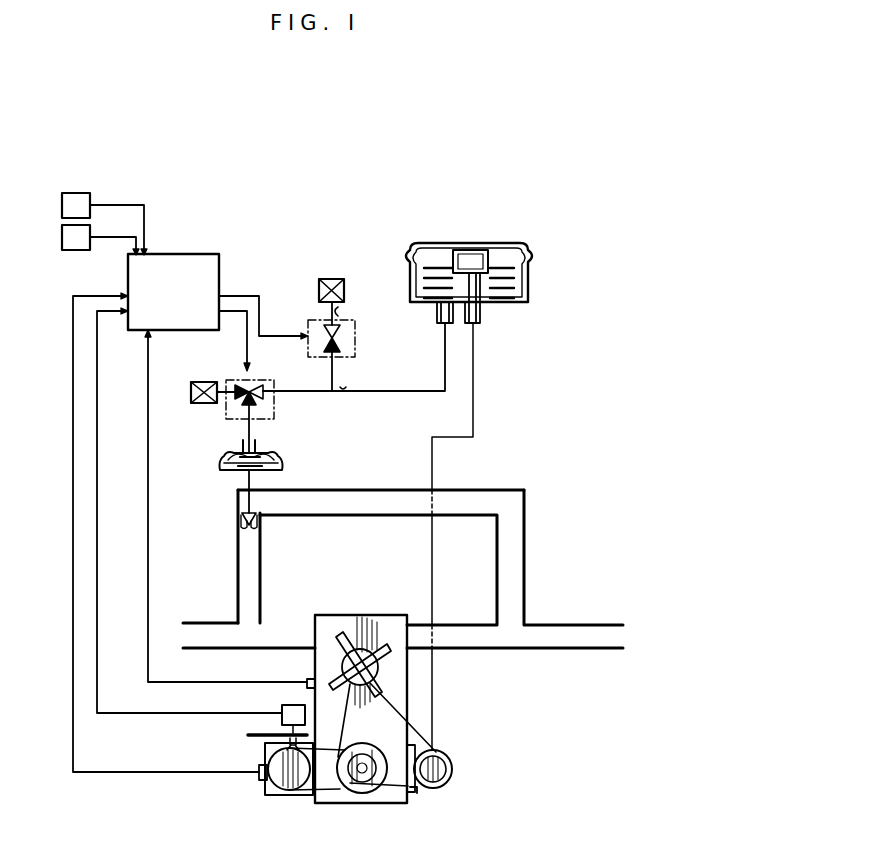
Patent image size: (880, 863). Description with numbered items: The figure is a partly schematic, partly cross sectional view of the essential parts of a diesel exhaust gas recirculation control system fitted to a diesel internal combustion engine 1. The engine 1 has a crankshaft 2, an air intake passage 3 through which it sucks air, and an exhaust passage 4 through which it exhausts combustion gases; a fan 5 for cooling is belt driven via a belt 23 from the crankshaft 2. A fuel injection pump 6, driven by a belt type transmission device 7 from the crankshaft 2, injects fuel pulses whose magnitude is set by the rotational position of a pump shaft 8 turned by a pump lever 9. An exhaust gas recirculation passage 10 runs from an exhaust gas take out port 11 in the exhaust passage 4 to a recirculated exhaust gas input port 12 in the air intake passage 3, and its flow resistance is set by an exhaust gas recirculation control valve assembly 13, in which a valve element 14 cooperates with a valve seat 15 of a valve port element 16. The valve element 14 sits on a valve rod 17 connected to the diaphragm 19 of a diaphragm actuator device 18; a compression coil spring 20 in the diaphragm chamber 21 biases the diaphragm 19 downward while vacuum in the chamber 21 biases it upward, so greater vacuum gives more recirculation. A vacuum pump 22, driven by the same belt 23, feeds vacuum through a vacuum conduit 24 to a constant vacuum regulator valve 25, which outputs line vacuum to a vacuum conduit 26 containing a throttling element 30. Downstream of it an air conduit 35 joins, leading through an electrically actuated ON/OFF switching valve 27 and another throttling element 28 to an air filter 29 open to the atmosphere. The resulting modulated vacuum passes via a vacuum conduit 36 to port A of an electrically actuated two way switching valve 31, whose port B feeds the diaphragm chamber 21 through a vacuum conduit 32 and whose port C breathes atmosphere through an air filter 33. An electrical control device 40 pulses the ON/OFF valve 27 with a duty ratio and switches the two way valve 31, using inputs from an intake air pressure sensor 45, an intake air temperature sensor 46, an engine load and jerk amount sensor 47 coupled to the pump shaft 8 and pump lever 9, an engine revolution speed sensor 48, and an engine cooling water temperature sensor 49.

The diesel internal combustion engine 1 is at (387, 803).
The crankshaft 2 is at (361, 793).
The air intake passage 3 is at (487, 648).
The exhaust passage 4 is at (246, 636).
The fan 5 is at (363, 688).
The fuel injection pump 6 is at (272, 795).
The belt type transmission device 7 is at (328, 803).
The pump shaft 8 is at (270, 748).
The pump lever 9 is at (248, 733).
The exhaust gas recirculation passage 10 is at (367, 490).
The exhaust gas take out port 11 is at (263, 621).
The recirculated exhaust gas input port 12 is at (518, 619).
The exhaust gas recirculation control valve assembly 13 is at (236, 490).
The valve element 14 is at (262, 517).
The valve seat 15 is at (240, 528).
The valve port element 16 is at (260, 528).
The valve rod 17 is at (255, 499).
The diaphragm actuator device 18 is at (286, 458).
The diaphragm 19 is at (232, 474).
The compression coil spring 20 is at (242, 447).
The diaphragm chamber 21 is at (222, 460).
The vacuum pump 22 is at (452, 766).
The belt 23 is at (413, 795).
The vacuum conduit 24 is at (435, 557).
The constant vacuum regulator valve 25 is at (533, 277).
The vacuum conduit 26 is at (393, 393).
The electrically actuated ON/OFF switching valve 27 is at (355, 343).
The throttling element 28 is at (328, 313).
The air filter 29 is at (333, 279).
The throttling element 30 is at (344, 398).
The electrically actuated two way switching valve 31 is at (274, 407).
The vacuum conduit 32 is at (251, 434).
The air filter 33 is at (195, 403).
The air conduit 35 is at (342, 366).
The vacuum conduit 36 is at (308, 391).
The electrical control device 40 is at (180, 254).
The intake air pressure sensor 45 is at (74, 193).
The intake air temperature sensor 46 is at (62, 233).
The engine load and jerk amount sensor 47 is at (282, 708).
The engine revolution speed sensor 48 is at (258, 777).
The engine cooling water temperature sensor 49 is at (307, 680).